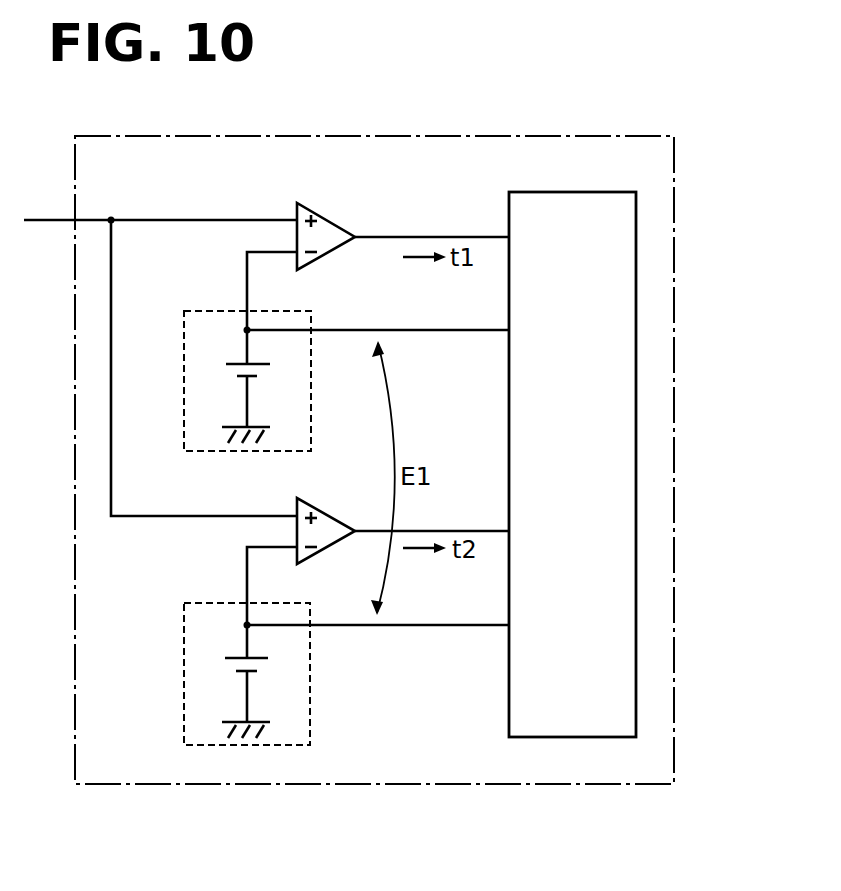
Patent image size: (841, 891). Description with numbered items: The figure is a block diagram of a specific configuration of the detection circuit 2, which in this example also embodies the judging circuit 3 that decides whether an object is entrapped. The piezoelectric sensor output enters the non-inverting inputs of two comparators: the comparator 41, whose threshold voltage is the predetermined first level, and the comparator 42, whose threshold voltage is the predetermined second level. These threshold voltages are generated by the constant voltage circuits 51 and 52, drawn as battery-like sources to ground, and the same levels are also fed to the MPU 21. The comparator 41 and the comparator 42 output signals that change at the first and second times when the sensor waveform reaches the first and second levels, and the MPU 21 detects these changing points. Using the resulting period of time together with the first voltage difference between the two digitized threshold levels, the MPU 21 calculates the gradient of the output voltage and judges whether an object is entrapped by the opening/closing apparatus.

The detection circuit 2 is at (415, 460).
The judging circuit 3 is at (677, 205).
The micro processing unit (MPU) 21 is at (608, 192).
The comparator 41 is at (326, 218).
The comparator 42 is at (333, 514).
The constant voltage circuit 51 is at (183, 330).
The constant voltage circuit 52 is at (181, 622).